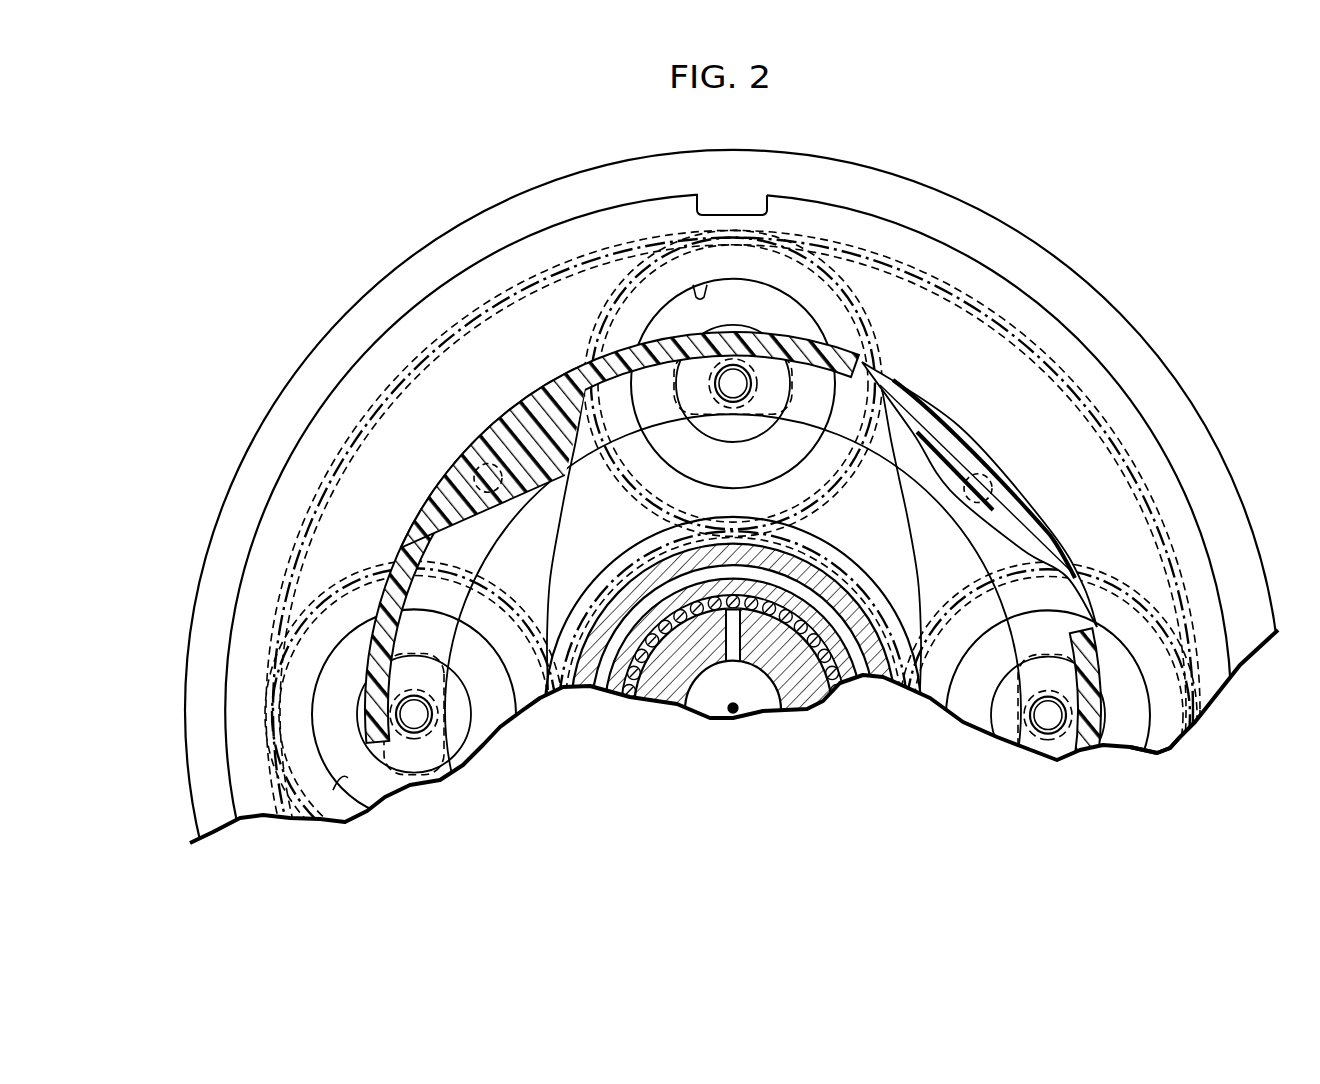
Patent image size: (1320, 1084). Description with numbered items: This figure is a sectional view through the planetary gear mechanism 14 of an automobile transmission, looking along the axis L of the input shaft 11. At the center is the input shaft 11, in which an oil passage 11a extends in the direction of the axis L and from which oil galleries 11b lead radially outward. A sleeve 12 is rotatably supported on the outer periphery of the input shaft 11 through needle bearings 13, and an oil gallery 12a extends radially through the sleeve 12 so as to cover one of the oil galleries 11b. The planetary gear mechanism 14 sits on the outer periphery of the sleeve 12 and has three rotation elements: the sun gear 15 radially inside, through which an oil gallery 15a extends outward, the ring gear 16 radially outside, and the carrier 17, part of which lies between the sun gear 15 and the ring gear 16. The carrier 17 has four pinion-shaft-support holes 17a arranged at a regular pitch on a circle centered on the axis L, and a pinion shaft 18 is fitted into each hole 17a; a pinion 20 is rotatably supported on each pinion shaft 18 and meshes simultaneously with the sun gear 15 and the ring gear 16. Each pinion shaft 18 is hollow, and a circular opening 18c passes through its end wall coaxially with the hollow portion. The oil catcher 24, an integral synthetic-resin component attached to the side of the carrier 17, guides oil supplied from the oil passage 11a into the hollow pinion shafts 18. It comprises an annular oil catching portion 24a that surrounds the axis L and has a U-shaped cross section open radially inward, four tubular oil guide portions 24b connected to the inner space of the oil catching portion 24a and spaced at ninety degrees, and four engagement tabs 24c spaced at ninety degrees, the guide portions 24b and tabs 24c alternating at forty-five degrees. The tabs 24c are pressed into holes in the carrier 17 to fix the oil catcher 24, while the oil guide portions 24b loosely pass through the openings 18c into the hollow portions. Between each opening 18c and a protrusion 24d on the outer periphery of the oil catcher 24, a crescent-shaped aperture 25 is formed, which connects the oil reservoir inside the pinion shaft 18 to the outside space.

The input shaft 11 is at (812, 715).
The oil passage 11a is at (735, 667).
The oil gallery 11b is at (712, 716).
The sleeve 12 is at (847, 635).
The oil gallery 12a is at (810, 592).
The needle bearing 13 is at (832, 700).
The planetary gear mechanism 14 is at (1130, 322).
The sun gear 15 is at (590, 590).
The oil gallery 15a is at (735, 550).
The ring gear 16 is at (990, 305).
The carrier 17 is at (450, 222).
The pinion-shaft-support hole 17a is at (693, 293).
The pinion shaft 18 is at (806, 305).
The opening 18c is at (700, 436).
The pinion 20 is at (590, 345).
The oil catcher 24 is at (1044, 506).
The oil catching portion 24a is at (566, 460).
The oil guide portion 24b is at (765, 405).
The engagement tab 24c is at (486, 476).
The protrusion 24d is at (1162, 746).
The aperture 25 is at (727, 330).
The axis L is at (733, 714).